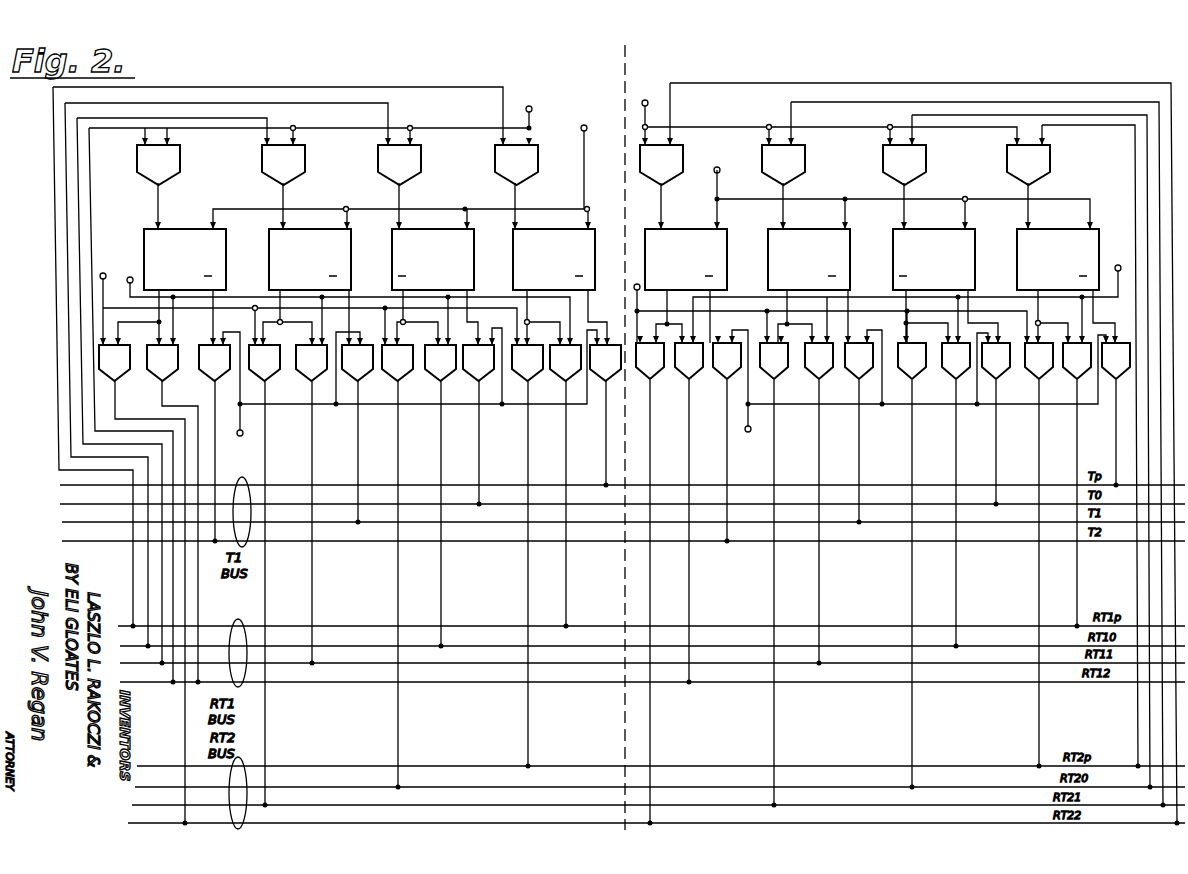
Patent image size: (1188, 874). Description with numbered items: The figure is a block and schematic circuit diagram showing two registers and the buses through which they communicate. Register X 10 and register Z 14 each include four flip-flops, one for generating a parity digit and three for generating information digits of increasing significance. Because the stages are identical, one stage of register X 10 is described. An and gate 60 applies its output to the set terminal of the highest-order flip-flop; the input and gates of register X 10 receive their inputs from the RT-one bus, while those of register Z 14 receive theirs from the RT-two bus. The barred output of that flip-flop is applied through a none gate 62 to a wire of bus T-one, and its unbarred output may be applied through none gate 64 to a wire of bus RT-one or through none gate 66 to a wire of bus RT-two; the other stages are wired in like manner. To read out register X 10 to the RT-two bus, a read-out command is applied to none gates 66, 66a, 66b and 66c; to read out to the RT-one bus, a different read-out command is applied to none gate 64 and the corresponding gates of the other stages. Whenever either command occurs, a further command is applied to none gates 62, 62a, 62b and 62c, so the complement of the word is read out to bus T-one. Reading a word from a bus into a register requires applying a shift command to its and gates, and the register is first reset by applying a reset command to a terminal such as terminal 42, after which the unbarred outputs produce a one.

The register X 10 is at (337, 436).
The register Z 14 is at (902, 436).
The reset terminal 42 is at (720, 174).
The and gate 60 is at (181, 156).
The none gate 62 is at (205, 377).
The none gate 62a is at (368, 375).
The none gate 62b is at (470, 375).
The none gate 62c is at (604, 381).
The none gate 64 is at (152, 379).
The none gate 66 is at (126, 376).
The none gate 66a is at (275, 375).
The none gate 66b is at (400, 376).
The none gate 66c is at (533, 378).